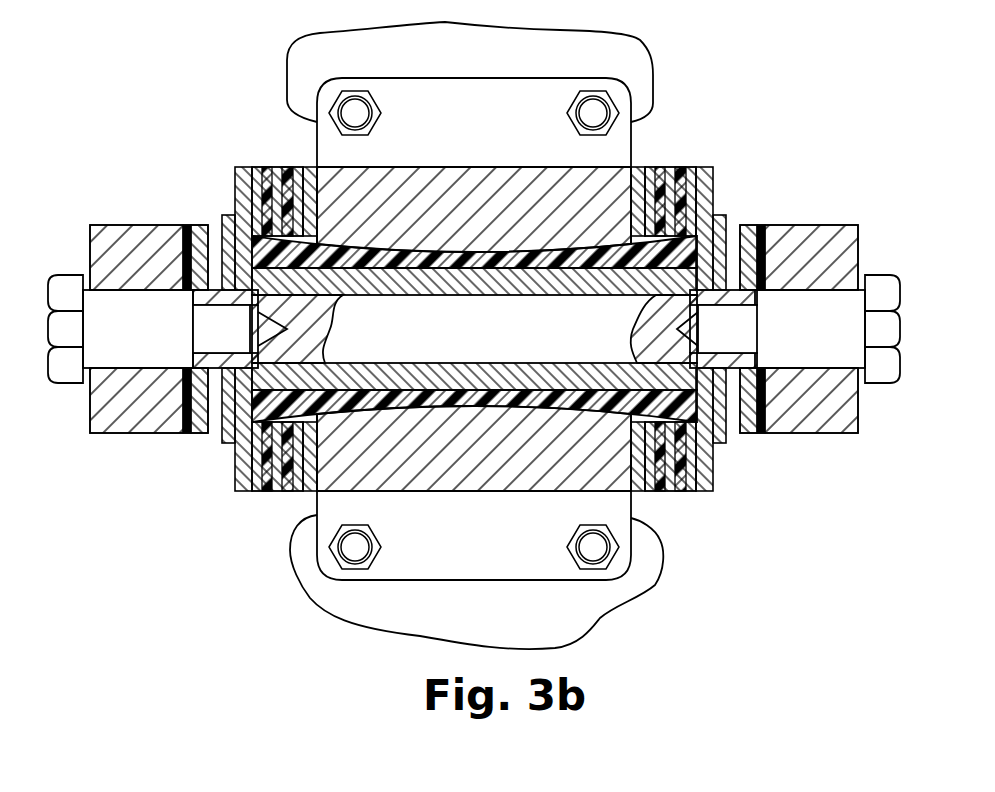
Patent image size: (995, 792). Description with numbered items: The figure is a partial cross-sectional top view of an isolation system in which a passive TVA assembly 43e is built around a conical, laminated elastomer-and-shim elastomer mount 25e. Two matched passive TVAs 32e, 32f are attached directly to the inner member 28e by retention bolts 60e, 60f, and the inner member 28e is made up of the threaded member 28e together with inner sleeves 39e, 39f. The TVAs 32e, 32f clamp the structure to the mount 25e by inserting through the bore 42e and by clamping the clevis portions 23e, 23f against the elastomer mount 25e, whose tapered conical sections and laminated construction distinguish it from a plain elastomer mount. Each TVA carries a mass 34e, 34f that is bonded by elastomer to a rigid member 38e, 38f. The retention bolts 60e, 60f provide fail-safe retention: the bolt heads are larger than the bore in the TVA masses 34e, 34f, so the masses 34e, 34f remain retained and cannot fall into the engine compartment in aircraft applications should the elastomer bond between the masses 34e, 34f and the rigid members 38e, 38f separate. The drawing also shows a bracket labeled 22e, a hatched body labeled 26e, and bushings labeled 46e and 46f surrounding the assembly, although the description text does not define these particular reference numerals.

The mounting bracket 22e is at (475, 335).
The clevis portion 23e is at (238, 488).
The clevis portion 23f is at (702, 167).
The elastomer mount 25e is at (276, 511).
The stator core 26e is at (474, 329).
The inner member 28e is at (475, 329).
The passive TVA 32e is at (134, 324).
The passive TVA 32f is at (814, 341).
The mass 34e is at (148, 436).
The mass 34f is at (820, 436).
The rigid member 38e is at (200, 436).
The rigid member 38f is at (750, 436).
The inner sleeve 39e is at (257, 166).
The inner sleeve 39f is at (690, 166).
The bore 42e is at (515, 361).
The passive TVA assembly 43e is at (769, 290).
The bushing 46e is at (227, 215).
The bushing 46f is at (727, 213).
The retention bolt 60e is at (66, 387).
The retention bolt 60f is at (883, 387).